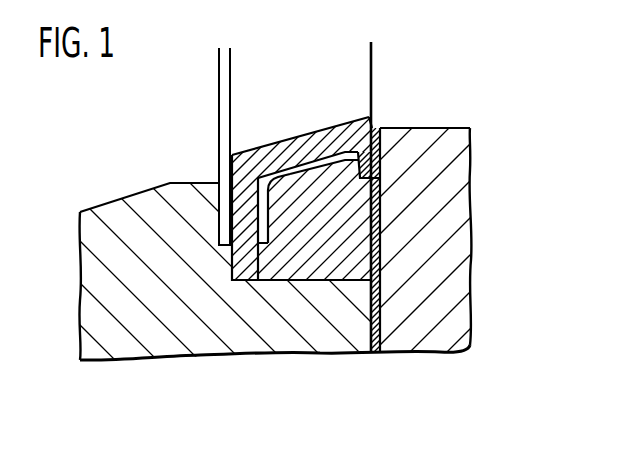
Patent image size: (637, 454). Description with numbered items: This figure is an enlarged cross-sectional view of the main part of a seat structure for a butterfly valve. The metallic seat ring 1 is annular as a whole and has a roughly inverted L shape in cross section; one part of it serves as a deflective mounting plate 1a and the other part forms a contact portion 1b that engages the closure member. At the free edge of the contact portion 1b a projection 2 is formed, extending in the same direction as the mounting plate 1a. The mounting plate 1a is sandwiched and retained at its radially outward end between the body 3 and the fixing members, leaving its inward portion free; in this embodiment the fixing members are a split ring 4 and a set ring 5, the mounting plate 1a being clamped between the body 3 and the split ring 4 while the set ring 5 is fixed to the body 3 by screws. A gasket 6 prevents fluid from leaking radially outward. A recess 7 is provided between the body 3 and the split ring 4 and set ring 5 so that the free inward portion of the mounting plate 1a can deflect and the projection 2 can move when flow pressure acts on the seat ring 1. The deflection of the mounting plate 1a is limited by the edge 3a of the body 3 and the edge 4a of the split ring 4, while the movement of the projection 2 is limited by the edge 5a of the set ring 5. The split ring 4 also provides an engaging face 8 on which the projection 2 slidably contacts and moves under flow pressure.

The seat ring 1 is at (303, 237).
The mounting plate 1a is at (246, 254).
The contact portion 1b is at (312, 143).
The projection 2 is at (378, 126).
The body 3 is at (268, 275).
The edge of the body 3a is at (208, 197).
The split ring 4 is at (321, 283).
The edge of the split ring 4a is at (266, 186).
The set ring 5 is at (412, 240).
The edge of the set ring 5a is at (382, 146).
The gasket 6 is at (378, 262).
The recess 7 is at (262, 170).
The engaging face 8 is at (383, 180).